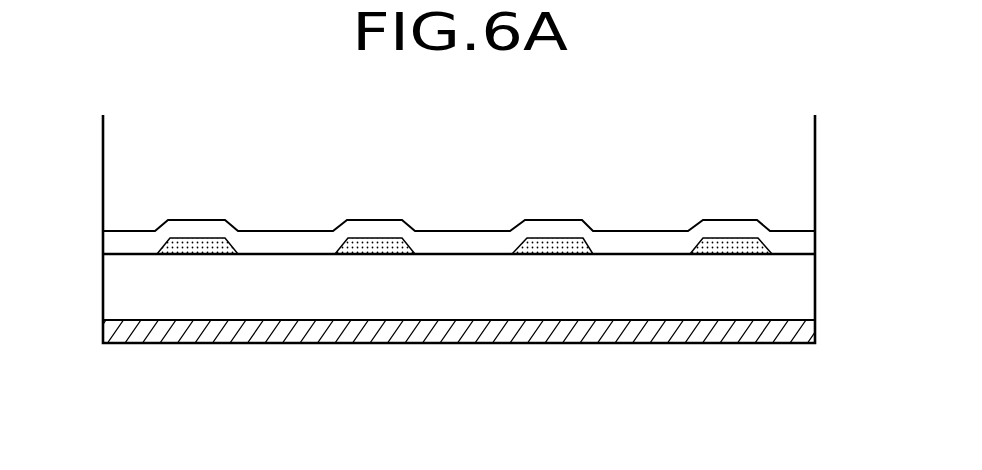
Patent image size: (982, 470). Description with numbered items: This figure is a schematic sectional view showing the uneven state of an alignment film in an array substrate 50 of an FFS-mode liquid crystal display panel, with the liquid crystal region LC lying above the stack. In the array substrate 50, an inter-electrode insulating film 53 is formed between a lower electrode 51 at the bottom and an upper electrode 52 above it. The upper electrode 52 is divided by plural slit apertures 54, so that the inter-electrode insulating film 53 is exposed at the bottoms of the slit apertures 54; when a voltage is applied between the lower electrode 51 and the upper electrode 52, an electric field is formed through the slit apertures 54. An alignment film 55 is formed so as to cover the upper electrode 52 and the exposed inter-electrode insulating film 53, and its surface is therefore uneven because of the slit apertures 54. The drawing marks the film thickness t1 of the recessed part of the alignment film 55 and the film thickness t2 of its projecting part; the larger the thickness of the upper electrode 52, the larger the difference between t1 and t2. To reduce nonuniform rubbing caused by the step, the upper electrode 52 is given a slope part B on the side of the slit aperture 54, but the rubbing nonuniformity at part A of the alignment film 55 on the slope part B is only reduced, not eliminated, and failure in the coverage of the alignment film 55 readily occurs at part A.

The array substrate 50 is at (154, 138).
The liquid crystal layer LC is at (794, 138).
The lower electrode 51 is at (732, 335).
The upper electrode 52 is at (553, 248).
The inter-electrode insulating film 53 is at (645, 292).
The slit aperture 54 is at (458, 244).
The alignment film 55 is at (279, 256).
The part A of alignment film A is at (590, 224).
The slope part B is at (514, 247).
The film thickness of recessed part t1 is at (278, 270).
The film thickness of projecting part t2 is at (375, 265).